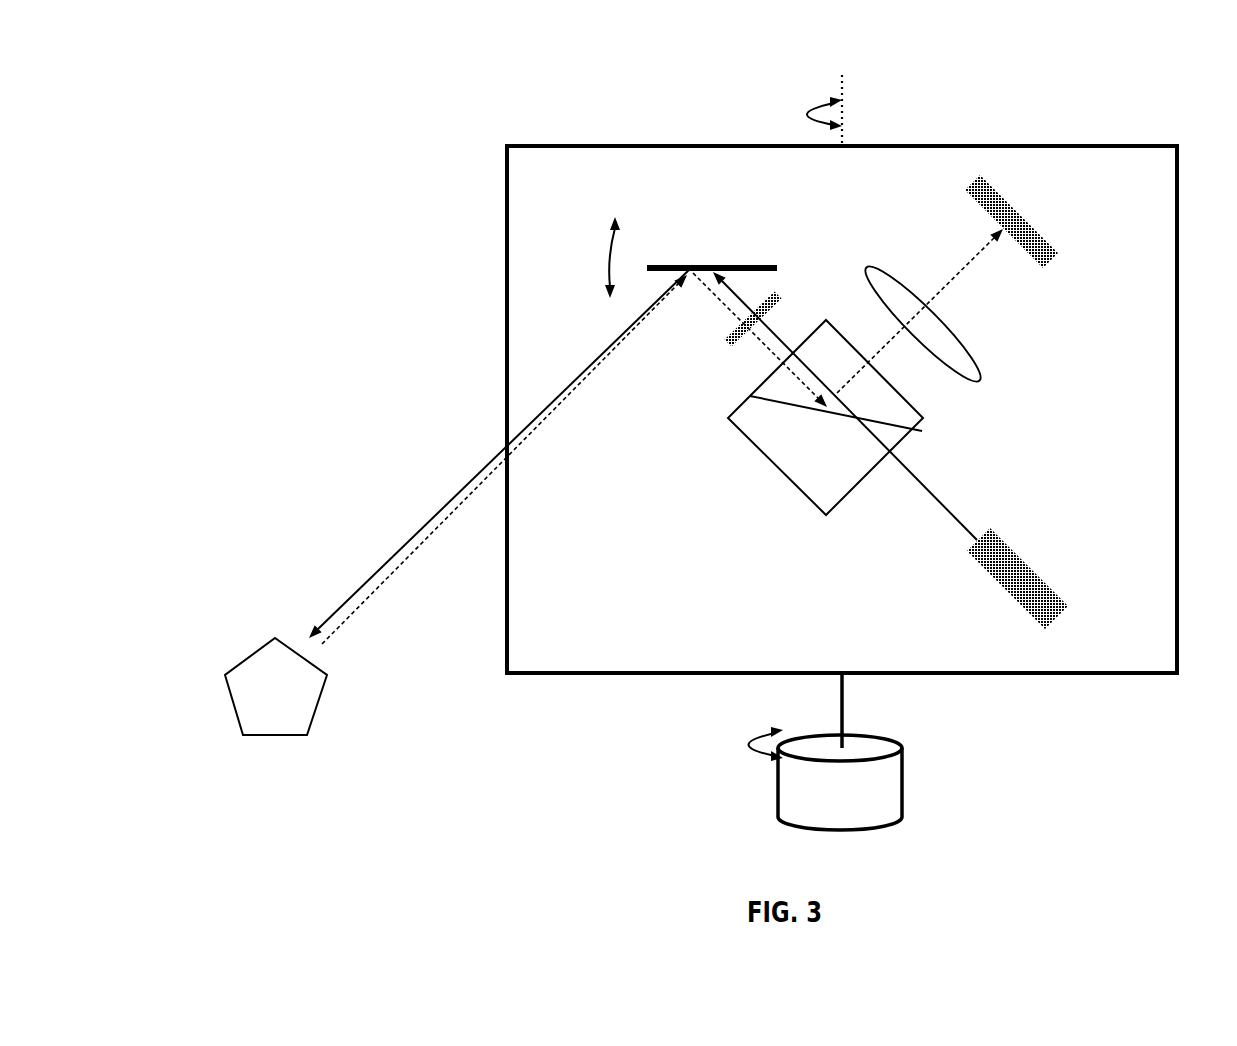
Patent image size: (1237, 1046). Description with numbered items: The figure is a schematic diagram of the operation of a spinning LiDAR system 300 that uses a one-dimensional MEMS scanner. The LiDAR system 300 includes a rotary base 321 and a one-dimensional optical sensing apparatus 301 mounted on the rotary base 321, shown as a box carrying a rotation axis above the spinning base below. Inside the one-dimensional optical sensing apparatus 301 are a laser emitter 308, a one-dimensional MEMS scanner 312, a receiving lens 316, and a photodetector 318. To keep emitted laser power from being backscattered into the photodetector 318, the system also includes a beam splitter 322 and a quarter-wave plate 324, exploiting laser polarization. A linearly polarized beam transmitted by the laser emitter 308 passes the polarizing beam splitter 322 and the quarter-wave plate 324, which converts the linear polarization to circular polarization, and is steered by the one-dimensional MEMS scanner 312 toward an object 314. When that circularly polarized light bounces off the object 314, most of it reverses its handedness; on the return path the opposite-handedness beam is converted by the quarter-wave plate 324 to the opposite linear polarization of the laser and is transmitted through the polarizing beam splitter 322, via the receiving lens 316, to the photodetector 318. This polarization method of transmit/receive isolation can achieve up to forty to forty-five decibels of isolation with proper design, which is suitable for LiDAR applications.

The LiDAR system 300 is at (800, 27).
The 1D optical sensing apparatus 301 is at (1100, 146).
The laser emitter 308 is at (1041, 578).
The 1D MEMS scanner 312 is at (765, 263).
The object 314 is at (276, 686).
The receiving lens 316 is at (981, 381).
The photodetector 318 is at (1048, 262).
The rotary base 321 is at (888, 740).
The beam splitter 322 is at (920, 430).
The quarter-wave plate 324 is at (779, 294).